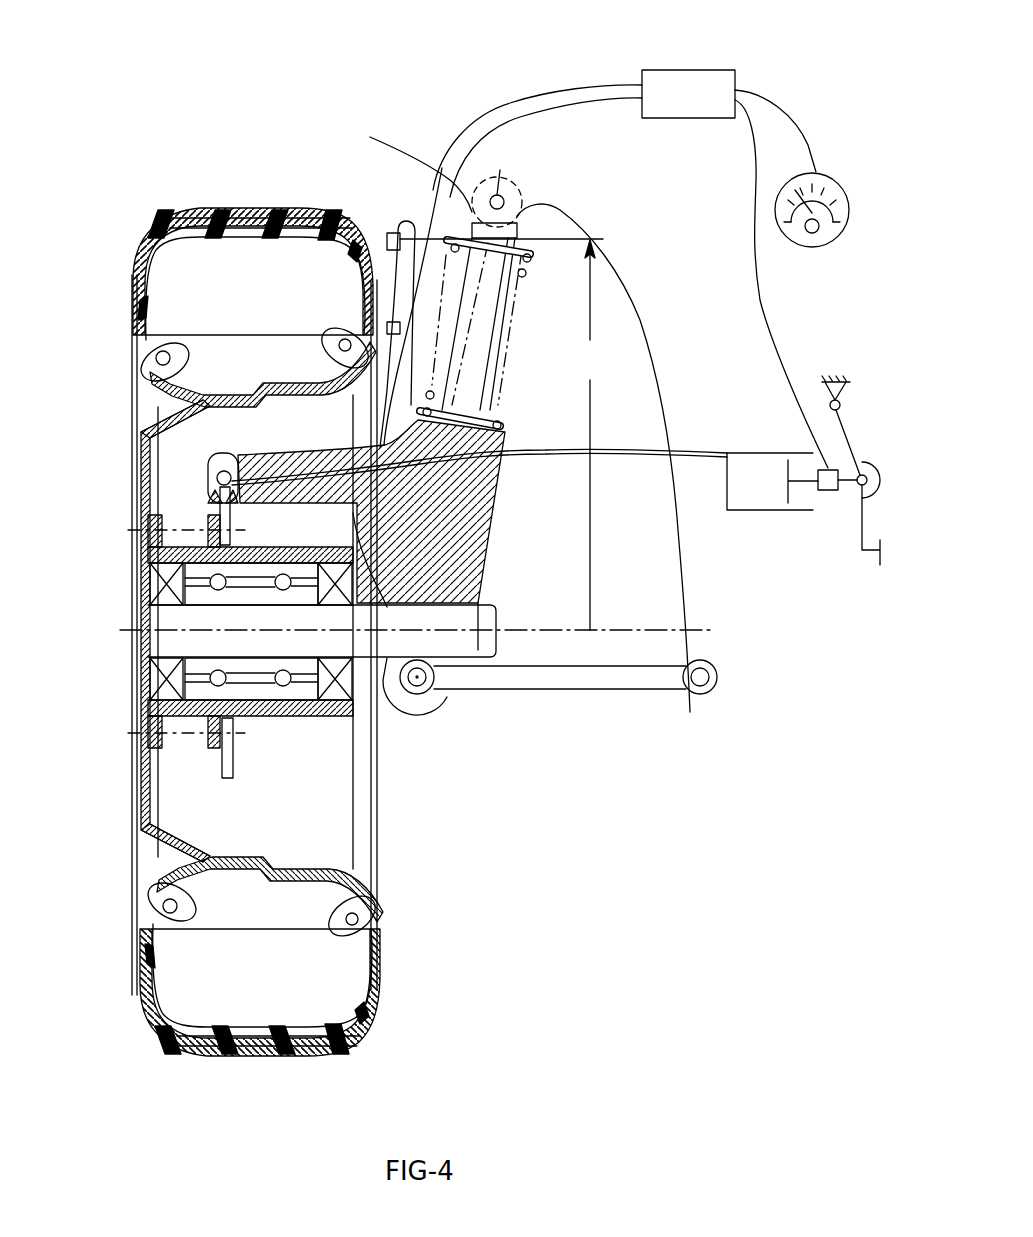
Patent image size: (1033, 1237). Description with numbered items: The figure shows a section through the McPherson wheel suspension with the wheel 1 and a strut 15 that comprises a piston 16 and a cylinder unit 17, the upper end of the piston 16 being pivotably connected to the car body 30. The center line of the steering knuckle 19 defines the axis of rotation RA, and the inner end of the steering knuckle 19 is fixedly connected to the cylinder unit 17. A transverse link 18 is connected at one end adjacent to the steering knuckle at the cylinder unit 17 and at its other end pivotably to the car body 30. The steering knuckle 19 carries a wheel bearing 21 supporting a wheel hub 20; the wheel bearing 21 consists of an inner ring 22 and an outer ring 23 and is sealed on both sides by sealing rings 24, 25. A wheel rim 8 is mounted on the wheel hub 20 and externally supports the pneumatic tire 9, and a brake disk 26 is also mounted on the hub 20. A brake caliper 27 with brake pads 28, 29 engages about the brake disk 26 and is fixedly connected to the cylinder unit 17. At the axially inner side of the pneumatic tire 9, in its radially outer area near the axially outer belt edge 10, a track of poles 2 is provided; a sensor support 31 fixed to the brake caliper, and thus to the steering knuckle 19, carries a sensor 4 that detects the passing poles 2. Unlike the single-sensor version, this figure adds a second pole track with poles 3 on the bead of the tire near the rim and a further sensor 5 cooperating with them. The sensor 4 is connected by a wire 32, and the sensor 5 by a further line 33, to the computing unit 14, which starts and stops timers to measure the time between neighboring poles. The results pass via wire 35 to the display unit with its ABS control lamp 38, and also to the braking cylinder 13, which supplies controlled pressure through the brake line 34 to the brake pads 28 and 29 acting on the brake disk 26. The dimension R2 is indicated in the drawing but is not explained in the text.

The wheel 1 is at (408, 823).
The poles 2 is at (367, 318).
The poles 3 is at (380, 333).
The sensor 4 is at (392, 233).
The further sensor 5 is at (394, 322).
The wheel rim 8 is at (145, 420).
The pneumatic tire 9 is at (152, 247).
The axially outer belt edge 10 is at (338, 212).
The braking cylinder 13 is at (762, 492).
The computing unit 14 is at (700, 80).
The strut 15 is at (490, 417).
The piston 16 is at (493, 318).
The cylinder unit 17 is at (478, 515).
The transverse link 18 is at (527, 677).
The steering knuckle 19 is at (468, 642).
The wheel hub 20 is at (335, 702).
The wheel bearing 21 is at (222, 722).
The inner ring 22 is at (212, 670).
The outer ring 23 is at (216, 684).
The sealing ring 24 is at (160, 584).
The sealing ring 25 is at (415, 690).
The brake disk 26 is at (228, 735).
The brake caliper 27 is at (215, 466).
The brake pad 28 is at (222, 490).
The brake pad 29 is at (212, 500).
The car body 30 is at (735, 368).
The sensor support 31 is at (406, 225).
The wire 32 is at (510, 110).
The further line 33 is at (567, 112).
The brake line 34 is at (653, 455).
The wire 35 is at (805, 130).
The ABS control lamp 38 is at (818, 228).
The radius R2 is at (504, 434).
The axis of rotation RA is at (583, 633).